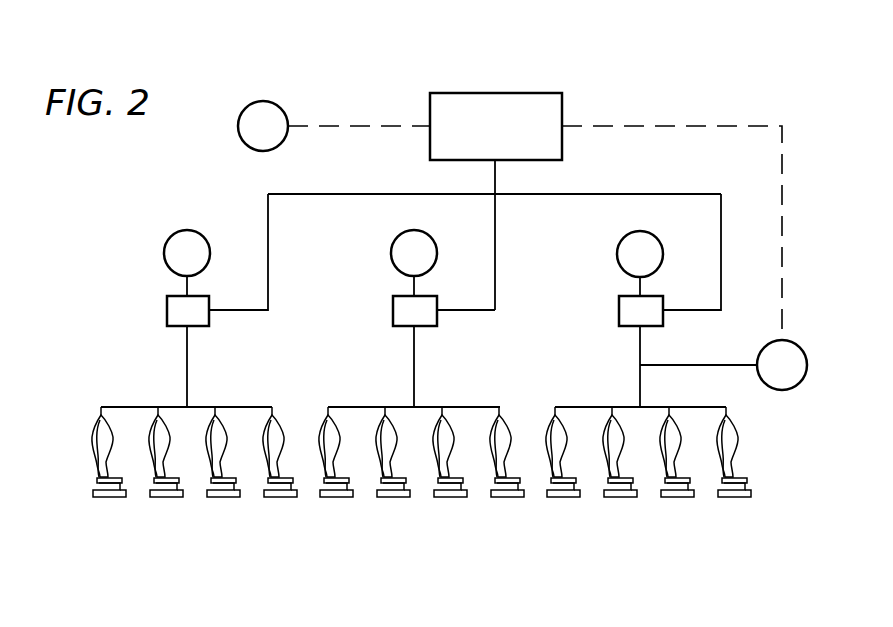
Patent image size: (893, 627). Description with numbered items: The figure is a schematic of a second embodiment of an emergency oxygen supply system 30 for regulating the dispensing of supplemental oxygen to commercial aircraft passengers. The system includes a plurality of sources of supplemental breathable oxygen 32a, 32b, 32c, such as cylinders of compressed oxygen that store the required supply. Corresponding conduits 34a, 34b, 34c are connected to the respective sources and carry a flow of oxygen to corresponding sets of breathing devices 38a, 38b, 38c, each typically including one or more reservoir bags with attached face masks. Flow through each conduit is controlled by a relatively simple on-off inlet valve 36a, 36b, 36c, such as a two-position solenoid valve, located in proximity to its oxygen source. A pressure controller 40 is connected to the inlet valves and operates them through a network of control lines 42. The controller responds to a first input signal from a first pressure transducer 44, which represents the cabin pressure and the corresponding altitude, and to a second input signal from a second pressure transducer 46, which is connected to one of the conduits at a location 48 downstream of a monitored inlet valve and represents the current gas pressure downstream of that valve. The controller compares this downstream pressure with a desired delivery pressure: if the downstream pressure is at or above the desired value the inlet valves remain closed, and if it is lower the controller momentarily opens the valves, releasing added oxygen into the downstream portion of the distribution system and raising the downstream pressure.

The emergency oxygen supply system 30 is at (606, 84).
The pressure controller 40 is at (481, 93).
The network of control lines 42 is at (350, 194).
The first pressure transducer 44 is at (240, 121).
The second pressure transducer 46 is at (758, 362).
The location downstream of inlet valve 48 is at (640, 366).
The source of supplemental breathable oxygen 32a is at (172, 235).
The source of supplemental breathable oxygen 32b is at (399, 235).
The source of supplemental breathable oxygen 32c is at (625, 236).
The conduit 34a is at (186, 286).
The conduit 34b is at (413, 286).
The conduit 34c is at (639, 286).
The on-off inlet valve 36a is at (167, 312).
The on-off inlet valve 36b is at (393, 312).
The on-off inlet valve 36c is at (619, 312).
The set of breathing devices 38a is at (200, 508).
The set of breathing devices 38b is at (427, 508).
The set of breathing devices 38c is at (654, 508).